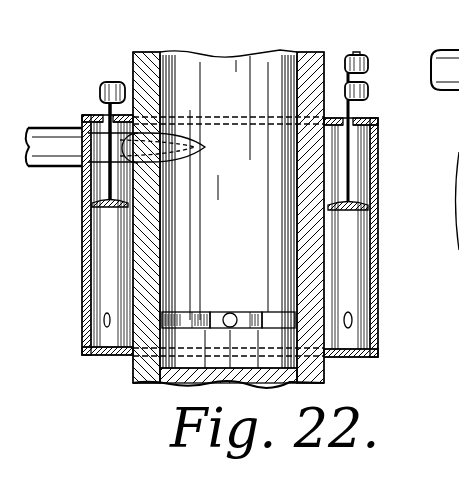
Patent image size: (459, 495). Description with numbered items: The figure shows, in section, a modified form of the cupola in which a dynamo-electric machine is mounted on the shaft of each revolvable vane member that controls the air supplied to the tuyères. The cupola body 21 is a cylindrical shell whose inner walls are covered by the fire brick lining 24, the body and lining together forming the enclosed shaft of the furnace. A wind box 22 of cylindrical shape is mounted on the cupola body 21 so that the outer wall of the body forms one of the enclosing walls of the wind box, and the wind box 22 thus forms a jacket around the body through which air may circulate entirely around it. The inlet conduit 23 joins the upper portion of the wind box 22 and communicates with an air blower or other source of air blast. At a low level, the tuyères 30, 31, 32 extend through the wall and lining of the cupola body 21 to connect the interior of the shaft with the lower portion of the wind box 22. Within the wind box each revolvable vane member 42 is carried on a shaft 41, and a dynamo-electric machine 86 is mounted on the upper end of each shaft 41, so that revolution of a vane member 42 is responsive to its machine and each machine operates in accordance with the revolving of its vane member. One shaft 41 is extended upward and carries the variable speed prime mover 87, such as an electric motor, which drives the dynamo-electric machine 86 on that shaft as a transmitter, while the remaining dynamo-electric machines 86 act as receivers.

The cupola body 21 is at (148, 292).
The wind box 22 is at (84, 236).
The inlet conduit 23 is at (53, 43).
The fire brick lining 24 is at (157, 258).
The tuyère 30 is at (183, 312).
The tuyère 31 is at (250, 312).
The tuyère 32 is at (285, 294).
The shaft 41 is at (106, 108).
The revolvable vane member 42 is at (95, 216).
The dynamo-electric machine 86 is at (100, 89).
The variable speed prime mover 87 is at (368, 61).